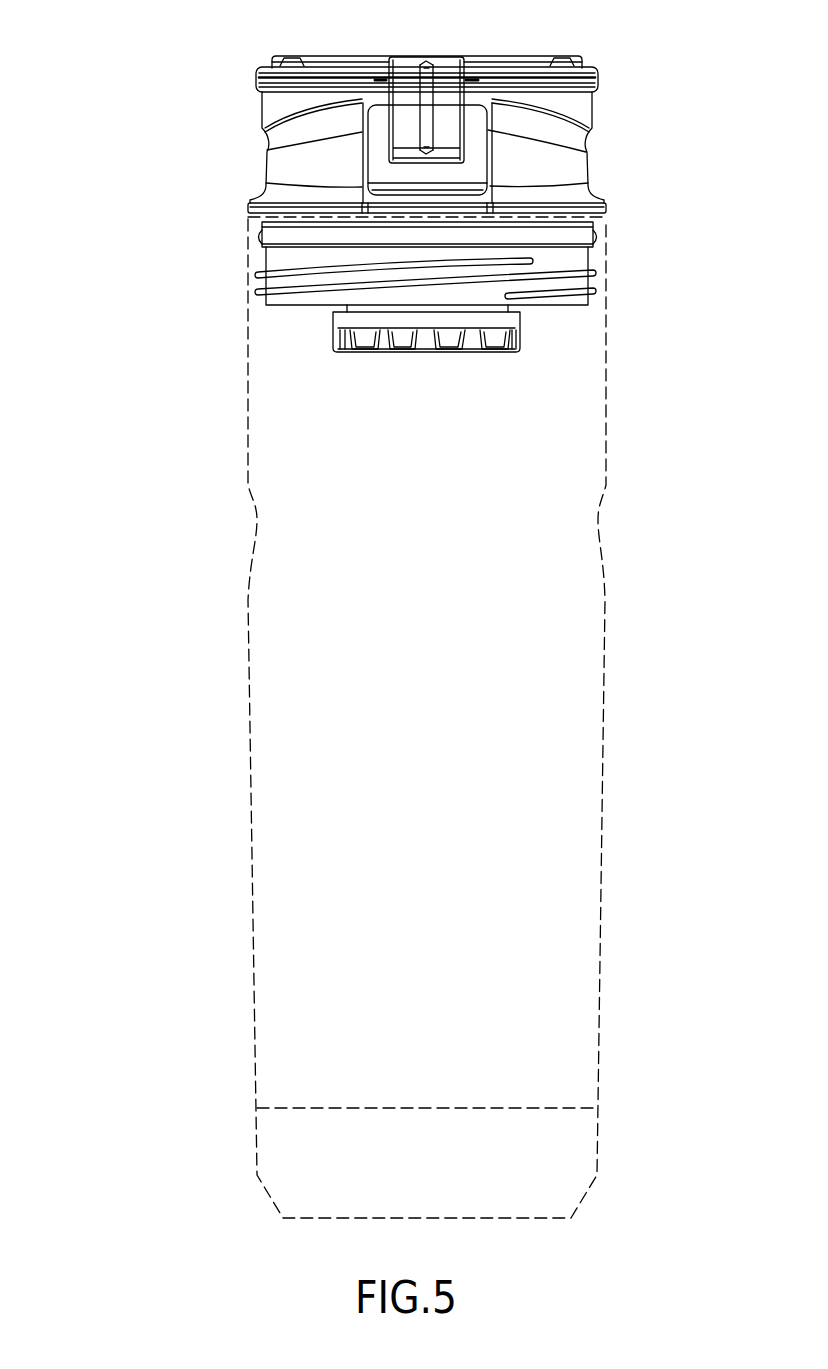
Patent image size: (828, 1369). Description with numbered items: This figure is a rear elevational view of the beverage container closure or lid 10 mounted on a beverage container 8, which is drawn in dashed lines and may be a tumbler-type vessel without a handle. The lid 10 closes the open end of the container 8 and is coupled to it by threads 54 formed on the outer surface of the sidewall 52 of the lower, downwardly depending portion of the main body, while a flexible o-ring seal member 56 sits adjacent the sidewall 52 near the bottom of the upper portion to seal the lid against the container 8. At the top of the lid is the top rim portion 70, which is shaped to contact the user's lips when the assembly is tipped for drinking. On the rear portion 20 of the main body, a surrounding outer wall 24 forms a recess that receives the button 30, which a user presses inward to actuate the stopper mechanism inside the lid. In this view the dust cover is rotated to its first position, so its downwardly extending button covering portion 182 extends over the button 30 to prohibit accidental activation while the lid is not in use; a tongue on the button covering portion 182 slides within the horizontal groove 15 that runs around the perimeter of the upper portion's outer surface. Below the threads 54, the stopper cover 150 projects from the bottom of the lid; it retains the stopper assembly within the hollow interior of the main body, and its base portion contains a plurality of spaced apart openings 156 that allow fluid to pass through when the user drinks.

The lid 10 is at (205, 63).
The beverage container 8 is at (605, 455).
The groove 15 is at (598, 77).
The rear portion 20 is at (327, 163).
The outer wall 24 is at (606, 205).
The button 30 is at (395, 175).
The sidewall 52 is at (573, 265).
The threads 54 is at (600, 290).
The o-ring seal member 56 is at (590, 232).
The top rim portion 70 is at (590, 64).
The stopper cover 150 is at (350, 323).
The openings 156 is at (402, 340).
The button covering portion 182 is at (432, 85).